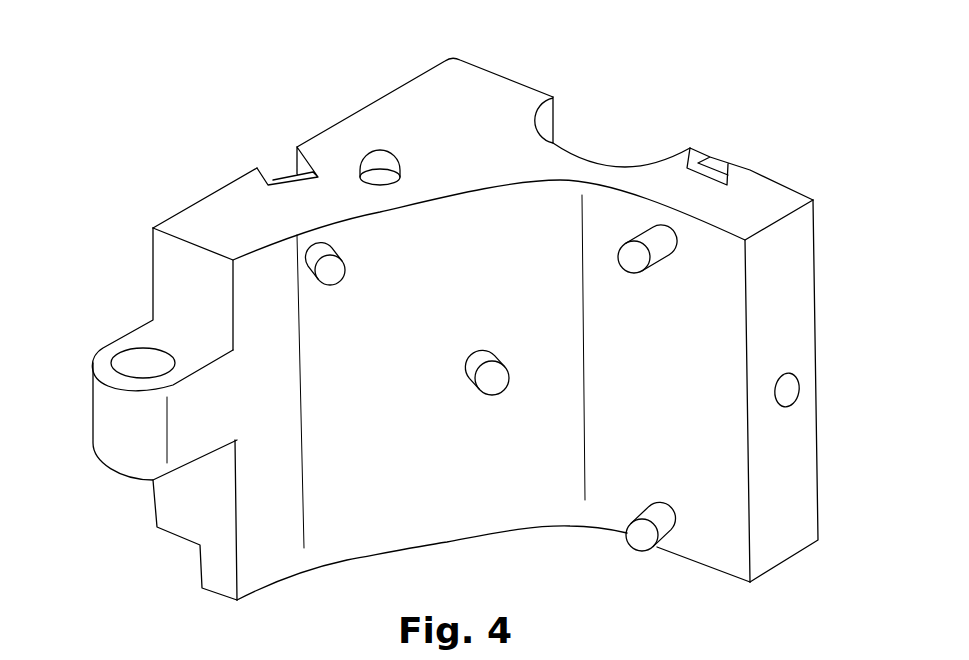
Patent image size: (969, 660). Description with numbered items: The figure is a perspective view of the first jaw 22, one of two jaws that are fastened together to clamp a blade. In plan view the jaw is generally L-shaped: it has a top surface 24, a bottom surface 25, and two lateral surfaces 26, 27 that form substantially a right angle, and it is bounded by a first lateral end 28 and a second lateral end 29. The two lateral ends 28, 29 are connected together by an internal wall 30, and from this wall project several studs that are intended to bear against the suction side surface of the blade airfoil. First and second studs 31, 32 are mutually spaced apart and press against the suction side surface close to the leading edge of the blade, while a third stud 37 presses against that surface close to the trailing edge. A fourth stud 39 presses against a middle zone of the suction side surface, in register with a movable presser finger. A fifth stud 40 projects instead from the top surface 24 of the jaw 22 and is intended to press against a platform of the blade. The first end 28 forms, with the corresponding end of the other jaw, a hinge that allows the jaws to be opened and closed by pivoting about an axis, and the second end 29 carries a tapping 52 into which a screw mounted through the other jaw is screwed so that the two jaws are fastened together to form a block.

The first jaw 22 is at (259, 89).
The top surface 24 is at (467, 112).
The bottom surface 25 is at (442, 548).
The lateral surface 26 is at (773, 174).
The lateral surface 27 is at (226, 184).
The first lateral end 28 is at (69, 387).
The second lateral end 29 is at (790, 442).
The internal wall 30 is at (532, 460).
The first stud 31 is at (632, 262).
The second stud 32 is at (643, 535).
The third stud 37 is at (333, 270).
The fourth stud 39 is at (482, 360).
The fifth stud 40 is at (380, 160).
The tapping 52 is at (787, 390).